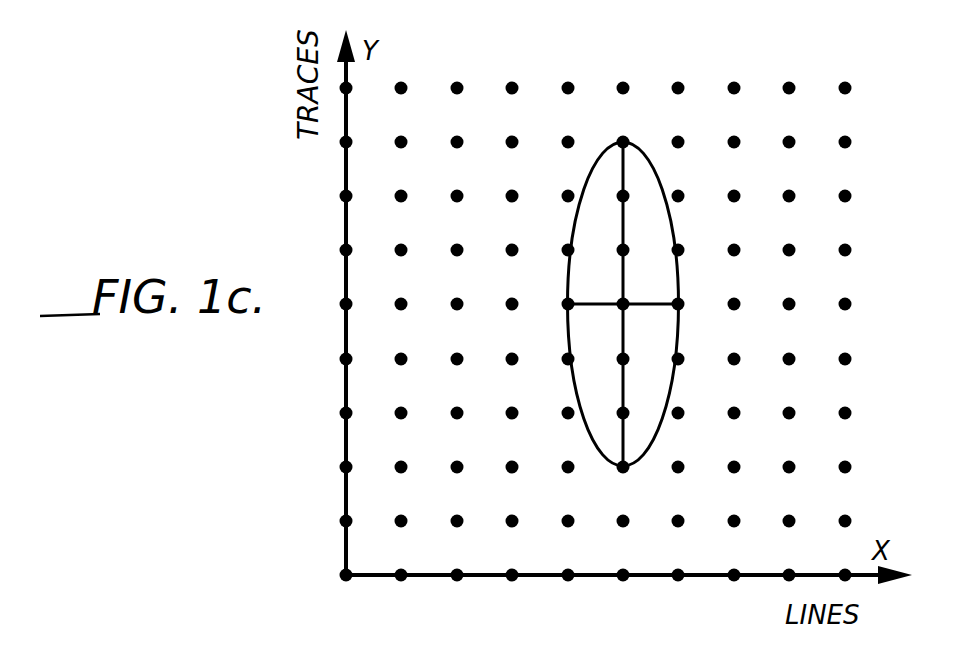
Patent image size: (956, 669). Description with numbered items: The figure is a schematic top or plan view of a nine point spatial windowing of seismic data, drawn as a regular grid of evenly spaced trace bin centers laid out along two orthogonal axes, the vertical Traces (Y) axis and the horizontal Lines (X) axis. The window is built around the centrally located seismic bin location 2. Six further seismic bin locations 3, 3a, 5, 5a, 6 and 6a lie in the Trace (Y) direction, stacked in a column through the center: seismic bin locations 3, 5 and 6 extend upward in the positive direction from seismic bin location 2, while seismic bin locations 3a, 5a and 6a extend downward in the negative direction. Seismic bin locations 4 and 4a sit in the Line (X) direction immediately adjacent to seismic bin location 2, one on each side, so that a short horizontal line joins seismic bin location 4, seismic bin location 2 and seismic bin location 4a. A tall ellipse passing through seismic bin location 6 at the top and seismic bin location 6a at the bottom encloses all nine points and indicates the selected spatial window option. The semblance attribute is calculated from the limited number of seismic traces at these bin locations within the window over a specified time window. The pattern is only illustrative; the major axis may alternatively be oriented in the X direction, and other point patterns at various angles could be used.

The seismic bin location 2 is at (630, 317).
The seismic bin location 3 is at (631, 252).
The seismic bin location 3a is at (637, 361).
The seismic bin location 4 is at (557, 306).
The seismic bin location 4a is at (692, 306).
The seismic bin location 5 is at (631, 198).
The seismic bin location 5a is at (637, 415).
The seismic bin location 6 is at (628, 132).
The seismic bin location 6a is at (628, 482).